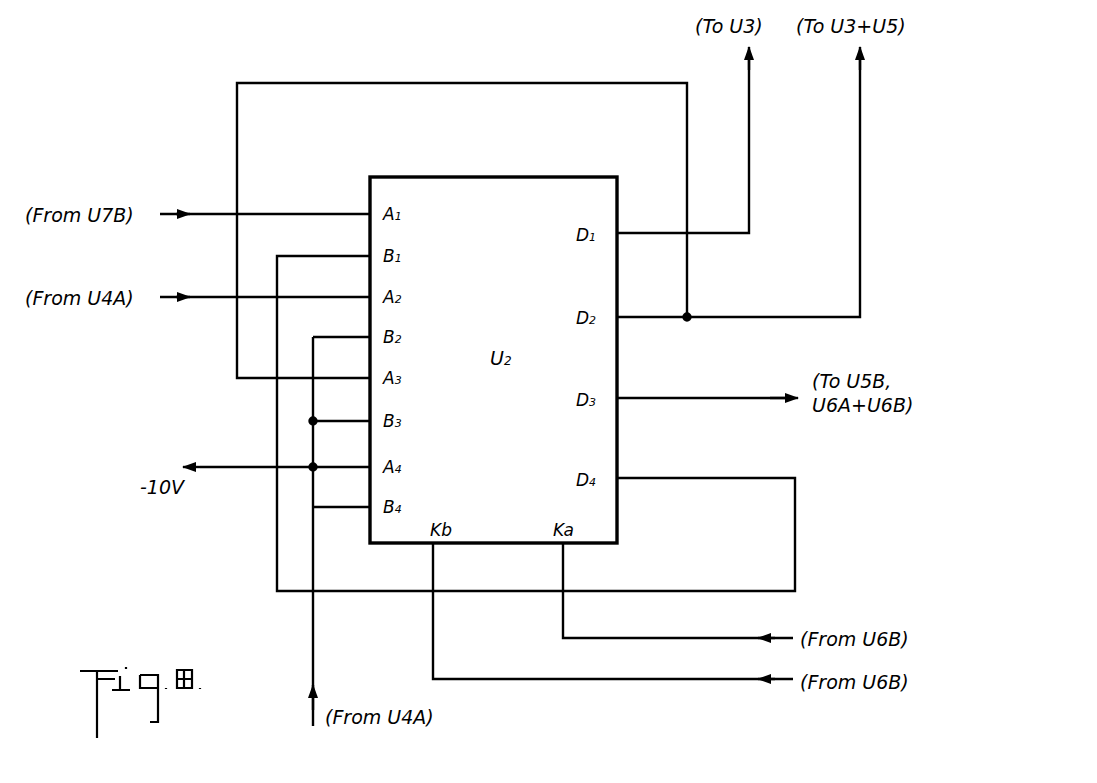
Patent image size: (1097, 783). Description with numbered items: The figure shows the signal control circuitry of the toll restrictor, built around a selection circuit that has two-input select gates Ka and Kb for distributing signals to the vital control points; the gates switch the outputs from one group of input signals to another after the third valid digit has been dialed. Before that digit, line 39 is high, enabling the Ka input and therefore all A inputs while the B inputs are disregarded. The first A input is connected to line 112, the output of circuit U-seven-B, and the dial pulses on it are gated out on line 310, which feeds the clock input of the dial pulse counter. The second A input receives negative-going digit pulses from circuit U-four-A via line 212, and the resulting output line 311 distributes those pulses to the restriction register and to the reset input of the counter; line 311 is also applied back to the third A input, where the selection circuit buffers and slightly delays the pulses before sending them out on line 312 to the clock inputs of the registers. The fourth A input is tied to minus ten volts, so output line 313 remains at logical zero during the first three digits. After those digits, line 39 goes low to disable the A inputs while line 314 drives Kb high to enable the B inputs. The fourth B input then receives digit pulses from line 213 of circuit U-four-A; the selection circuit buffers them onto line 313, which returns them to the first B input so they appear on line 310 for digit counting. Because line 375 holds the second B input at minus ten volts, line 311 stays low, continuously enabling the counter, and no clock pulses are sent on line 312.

The line 112 is at (290, 220).
The line 212 is at (206, 300).
The output line 311 is at (670, 300).
The line 310 is at (664, 220).
The line 312 is at (668, 390).
The output line 313 is at (673, 462).
The line 375 is at (309, 400).
The line 213 is at (313, 634).
The line 314 is at (433, 573).
The line 39 is at (563, 572).